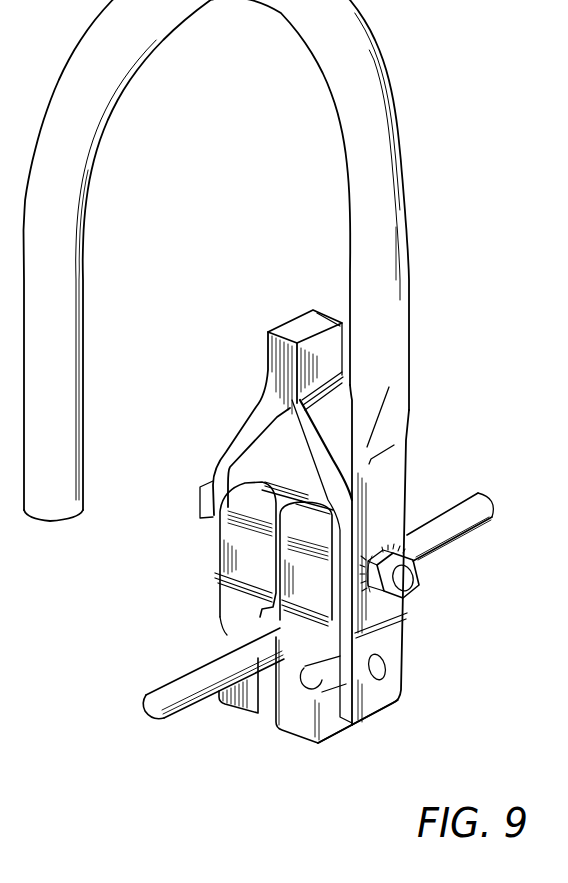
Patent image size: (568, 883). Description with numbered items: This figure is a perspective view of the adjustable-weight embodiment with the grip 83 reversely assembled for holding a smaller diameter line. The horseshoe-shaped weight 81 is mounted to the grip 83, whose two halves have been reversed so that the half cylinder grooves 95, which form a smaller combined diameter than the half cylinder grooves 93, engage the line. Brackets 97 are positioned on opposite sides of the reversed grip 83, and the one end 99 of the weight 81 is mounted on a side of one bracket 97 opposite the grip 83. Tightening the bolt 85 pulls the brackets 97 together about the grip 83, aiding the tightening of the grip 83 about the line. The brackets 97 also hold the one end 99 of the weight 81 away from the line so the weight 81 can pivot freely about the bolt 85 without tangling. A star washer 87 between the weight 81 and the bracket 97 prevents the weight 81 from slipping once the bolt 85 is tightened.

The weight 81 is at (87, 179).
The grip 83 is at (152, 611).
The bolt 85 is at (421, 597).
The star washer 87 is at (375, 600).
The half cylinder grooves 93 is at (222, 636).
The half cylinder grooves 95 is at (263, 630).
The brackets 97 is at (243, 430).
The one end of weight 99 is at (401, 492).